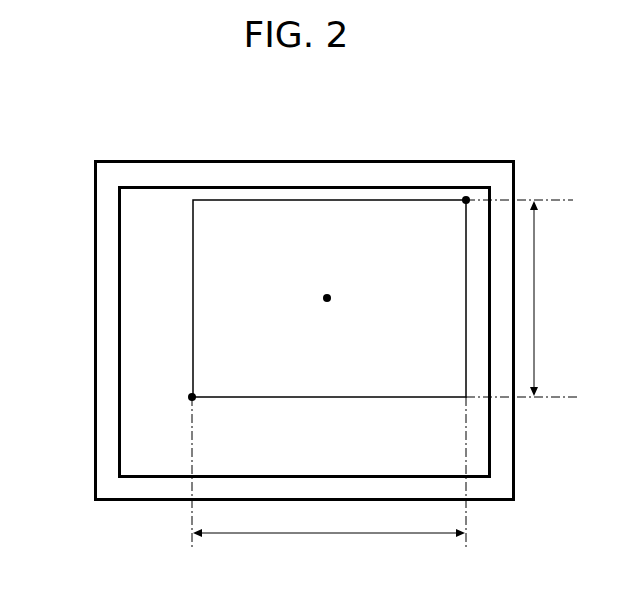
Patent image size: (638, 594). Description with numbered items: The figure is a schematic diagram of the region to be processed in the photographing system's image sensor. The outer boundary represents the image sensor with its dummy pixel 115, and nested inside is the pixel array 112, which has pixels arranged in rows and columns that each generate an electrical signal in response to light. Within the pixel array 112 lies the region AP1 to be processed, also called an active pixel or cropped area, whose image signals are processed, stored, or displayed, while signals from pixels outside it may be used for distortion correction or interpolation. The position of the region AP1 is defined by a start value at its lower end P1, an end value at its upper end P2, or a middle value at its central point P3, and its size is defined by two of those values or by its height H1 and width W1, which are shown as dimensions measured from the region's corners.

The pixel array 112 is at (144, 187).
The dummy pixel 115 is at (120, 494).
The region to be processed AP1 is at (328, 200).
The lower end P1 is at (192, 397).
The upper end P2 is at (467, 198).
The central point P3 is at (327, 298).
The height H1 is at (547, 298).
The width W1 is at (329, 526).